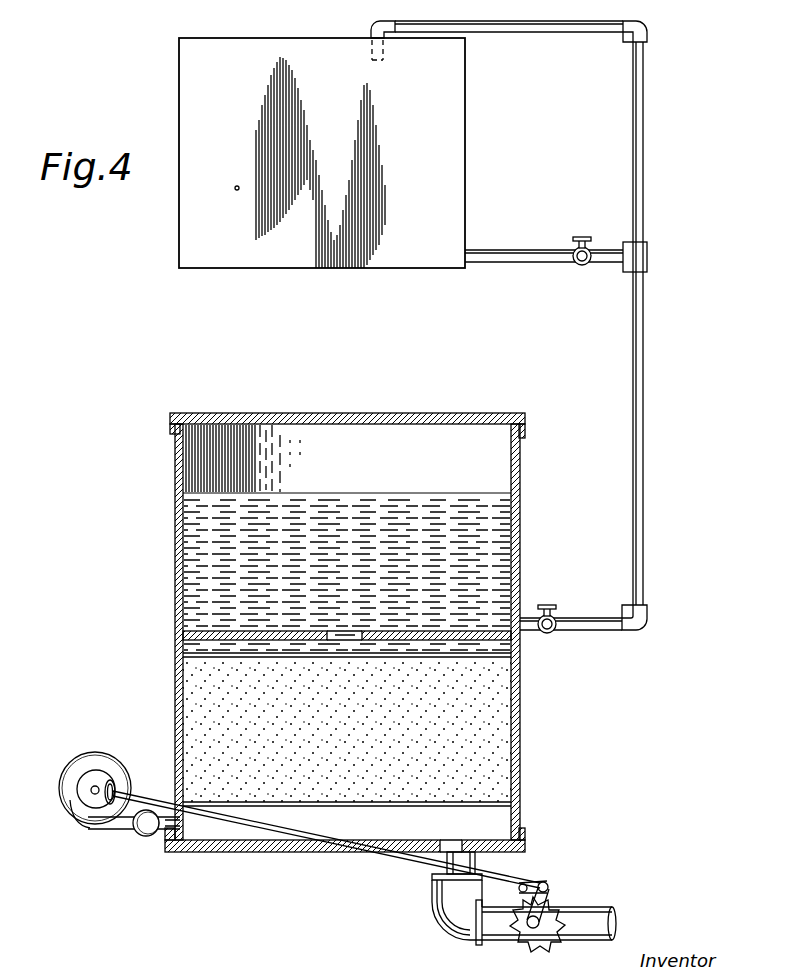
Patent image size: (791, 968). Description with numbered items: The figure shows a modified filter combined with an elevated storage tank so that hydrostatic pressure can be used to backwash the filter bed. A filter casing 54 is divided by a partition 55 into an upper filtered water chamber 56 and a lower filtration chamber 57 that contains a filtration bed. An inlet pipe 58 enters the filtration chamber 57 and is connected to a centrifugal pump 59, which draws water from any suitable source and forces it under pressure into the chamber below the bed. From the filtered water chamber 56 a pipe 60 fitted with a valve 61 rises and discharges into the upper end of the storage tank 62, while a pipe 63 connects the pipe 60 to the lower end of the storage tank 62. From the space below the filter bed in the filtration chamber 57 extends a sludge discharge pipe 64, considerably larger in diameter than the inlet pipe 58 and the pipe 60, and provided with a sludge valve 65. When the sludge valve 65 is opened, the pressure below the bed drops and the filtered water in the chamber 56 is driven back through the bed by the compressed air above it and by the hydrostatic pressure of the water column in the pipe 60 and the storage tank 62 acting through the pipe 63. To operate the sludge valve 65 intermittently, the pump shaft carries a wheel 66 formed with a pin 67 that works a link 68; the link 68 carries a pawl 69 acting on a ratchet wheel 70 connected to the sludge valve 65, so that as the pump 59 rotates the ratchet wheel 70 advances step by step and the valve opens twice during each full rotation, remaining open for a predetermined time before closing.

The filter casing 54 is at (520, 545).
The partition 55 is at (219, 630).
The filtered water chamber 56 is at (347, 459).
The filtration chamber 57 is at (505, 762).
The inlet pipe 58 is at (163, 836).
The pump 59 is at (72, 800).
The pipe 60 is at (643, 188).
The valve 61 is at (548, 633).
The storage tank 62 is at (465, 215).
The pipe 63 is at (548, 262).
The sludge discharge pipe 64 is at (577, 930).
The sludge valve 65 is at (545, 936).
The wheel 66 is at (86, 784).
The pin 67 is at (105, 803).
The link 68 is at (258, 832).
The pawl 69 is at (549, 890).
The ratchet wheel 70 is at (526, 936).